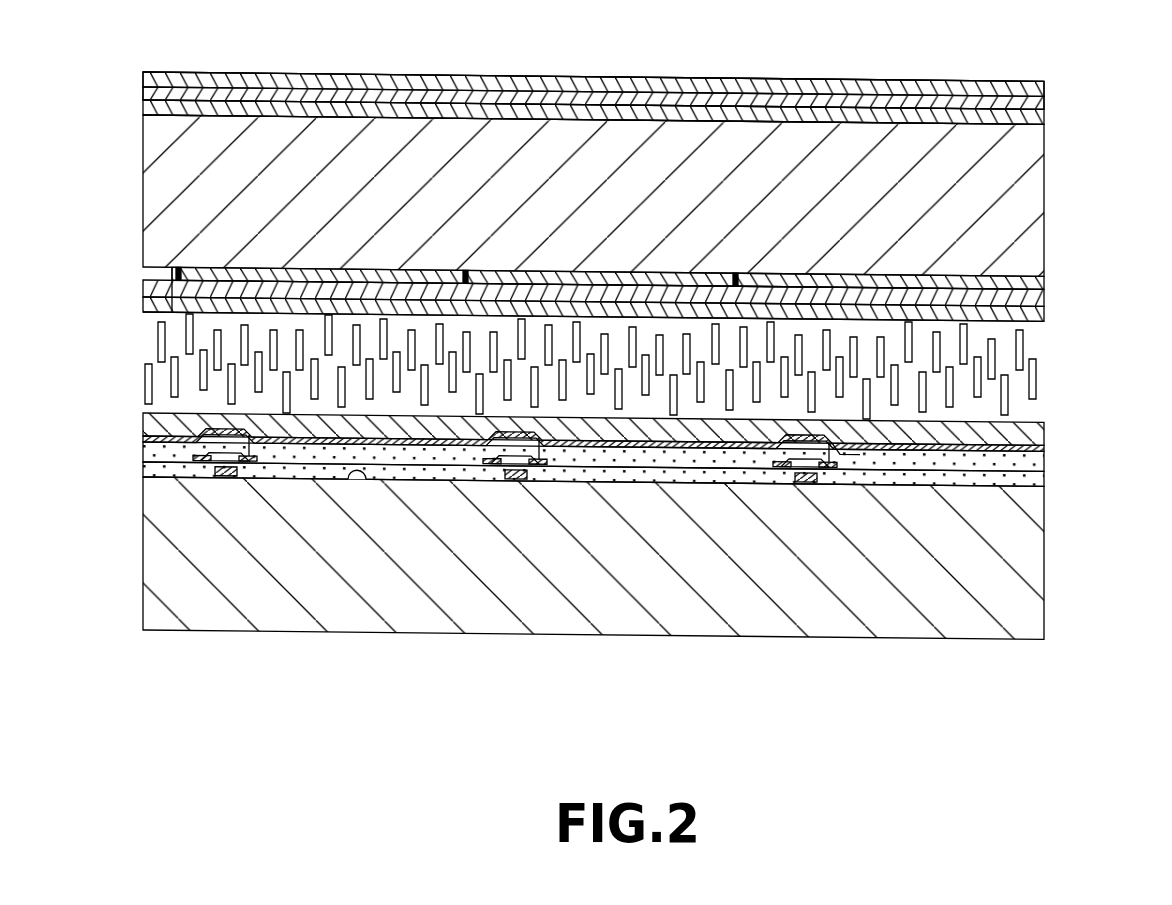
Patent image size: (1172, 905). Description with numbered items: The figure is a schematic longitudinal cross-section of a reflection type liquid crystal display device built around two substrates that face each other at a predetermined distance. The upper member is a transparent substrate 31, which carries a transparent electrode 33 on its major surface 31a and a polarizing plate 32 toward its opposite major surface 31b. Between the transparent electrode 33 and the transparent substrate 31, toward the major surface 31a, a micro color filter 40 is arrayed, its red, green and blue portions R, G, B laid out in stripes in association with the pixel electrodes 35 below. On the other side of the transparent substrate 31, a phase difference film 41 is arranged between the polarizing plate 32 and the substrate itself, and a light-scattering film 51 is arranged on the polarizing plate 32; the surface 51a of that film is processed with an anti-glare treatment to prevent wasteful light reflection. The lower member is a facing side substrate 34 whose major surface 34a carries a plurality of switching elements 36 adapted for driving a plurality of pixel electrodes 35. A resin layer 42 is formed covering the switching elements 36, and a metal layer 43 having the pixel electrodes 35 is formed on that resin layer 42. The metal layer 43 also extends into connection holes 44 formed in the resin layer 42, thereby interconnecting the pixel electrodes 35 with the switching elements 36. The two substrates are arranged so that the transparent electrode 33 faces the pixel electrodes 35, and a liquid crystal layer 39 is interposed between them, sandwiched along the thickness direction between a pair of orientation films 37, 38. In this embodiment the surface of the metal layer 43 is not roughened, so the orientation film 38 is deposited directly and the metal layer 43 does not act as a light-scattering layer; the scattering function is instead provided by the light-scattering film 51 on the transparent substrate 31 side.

The transparent substrate 31 is at (1030, 196).
The major surface of transparent substrate 31a is at (170, 300).
The opposite major surface of transparent substrate 31b is at (382, 112).
The polarizing plate 32 is at (1037, 101).
The transparent electrode 33 is at (158, 293).
The facing side substrate 34 is at (434, 597).
The major surface of facing side substrate 34a is at (369, 470).
The pixel electrodes 35 is at (280, 441).
The switching elements 36 is at (220, 481).
The orientation film 37 is at (1036, 316).
The orientation film 38 is at (1032, 432).
The liquid crystal layer 39 is at (1040, 370).
The micro color filter 40 is at (1036, 281).
The phase difference film 41 is at (1035, 120).
The resin layer 42 is at (1030, 462).
The metal layer 43 is at (1000, 448).
The connection holes 44 is at (840, 448).
The light-scattering film 51 is at (821, 82).
The surface of light-scattering film 51a is at (883, 79).
The red stripe of micro color filter R is at (292, 272).
The green stripe of micro color filter G is at (581, 274).
The blue stripe of micro color filter B is at (872, 280).